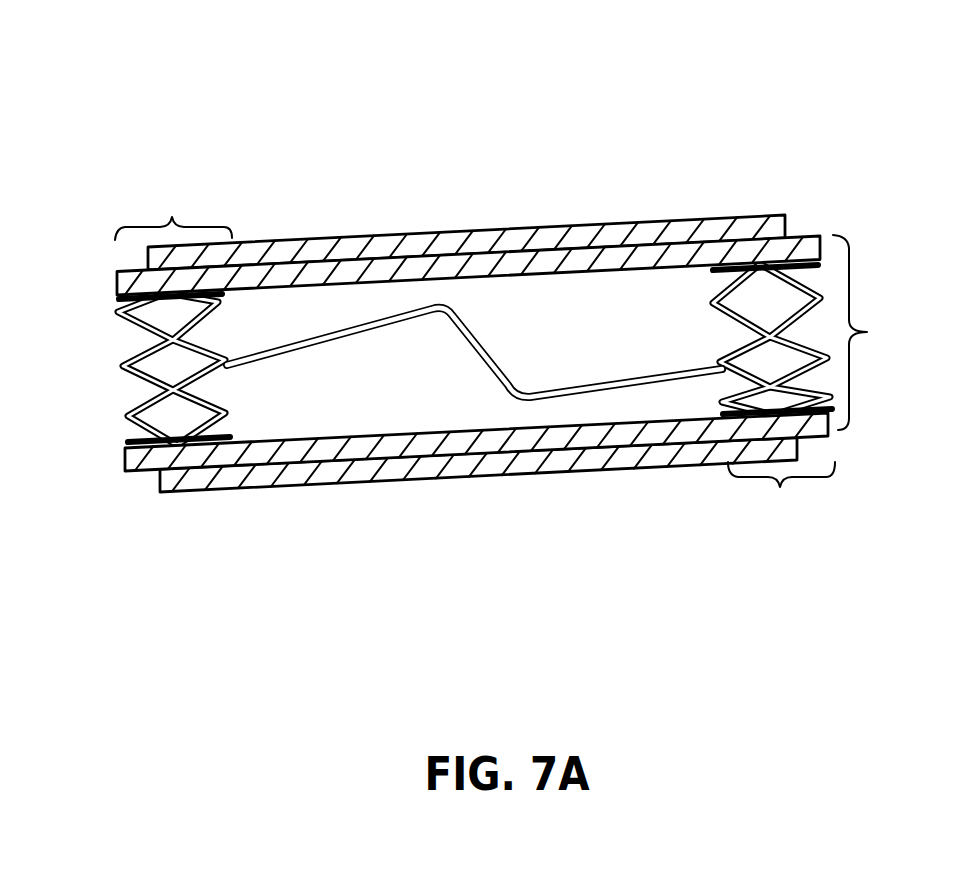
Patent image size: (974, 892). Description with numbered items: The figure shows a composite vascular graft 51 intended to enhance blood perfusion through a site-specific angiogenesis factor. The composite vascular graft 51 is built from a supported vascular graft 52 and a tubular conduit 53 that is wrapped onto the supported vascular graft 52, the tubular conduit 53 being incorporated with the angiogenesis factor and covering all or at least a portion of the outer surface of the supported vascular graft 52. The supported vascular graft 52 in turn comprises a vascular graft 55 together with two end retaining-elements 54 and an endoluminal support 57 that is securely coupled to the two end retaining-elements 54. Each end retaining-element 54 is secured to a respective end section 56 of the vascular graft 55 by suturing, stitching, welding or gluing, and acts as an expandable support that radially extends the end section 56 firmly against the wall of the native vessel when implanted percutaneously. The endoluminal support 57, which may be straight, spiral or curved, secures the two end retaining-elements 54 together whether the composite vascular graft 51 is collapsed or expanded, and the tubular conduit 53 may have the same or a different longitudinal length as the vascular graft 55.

The composite vascular graft 51 is at (728, 147).
The supported vascular graft 52 is at (872, 332).
The tubular conduit 53 is at (762, 216).
The end retaining-element 54 is at (140, 400).
The vascular graft 55 is at (816, 241).
The end section 56 is at (475, 349).
The endoluminal support 57 is at (327, 327).